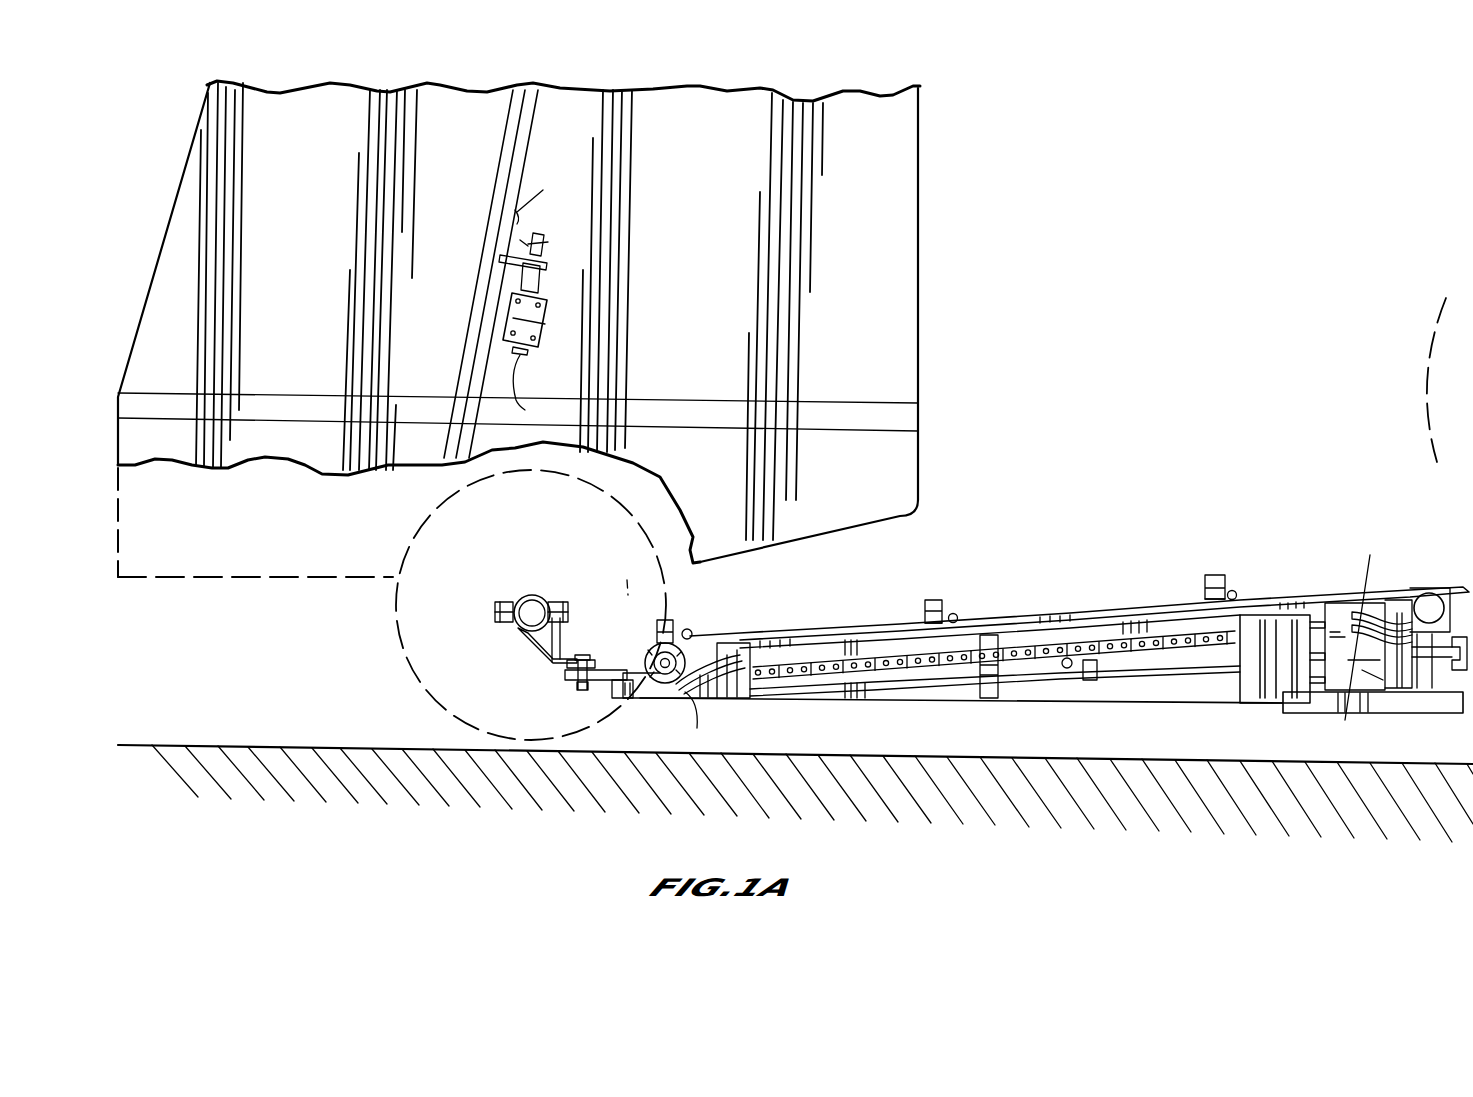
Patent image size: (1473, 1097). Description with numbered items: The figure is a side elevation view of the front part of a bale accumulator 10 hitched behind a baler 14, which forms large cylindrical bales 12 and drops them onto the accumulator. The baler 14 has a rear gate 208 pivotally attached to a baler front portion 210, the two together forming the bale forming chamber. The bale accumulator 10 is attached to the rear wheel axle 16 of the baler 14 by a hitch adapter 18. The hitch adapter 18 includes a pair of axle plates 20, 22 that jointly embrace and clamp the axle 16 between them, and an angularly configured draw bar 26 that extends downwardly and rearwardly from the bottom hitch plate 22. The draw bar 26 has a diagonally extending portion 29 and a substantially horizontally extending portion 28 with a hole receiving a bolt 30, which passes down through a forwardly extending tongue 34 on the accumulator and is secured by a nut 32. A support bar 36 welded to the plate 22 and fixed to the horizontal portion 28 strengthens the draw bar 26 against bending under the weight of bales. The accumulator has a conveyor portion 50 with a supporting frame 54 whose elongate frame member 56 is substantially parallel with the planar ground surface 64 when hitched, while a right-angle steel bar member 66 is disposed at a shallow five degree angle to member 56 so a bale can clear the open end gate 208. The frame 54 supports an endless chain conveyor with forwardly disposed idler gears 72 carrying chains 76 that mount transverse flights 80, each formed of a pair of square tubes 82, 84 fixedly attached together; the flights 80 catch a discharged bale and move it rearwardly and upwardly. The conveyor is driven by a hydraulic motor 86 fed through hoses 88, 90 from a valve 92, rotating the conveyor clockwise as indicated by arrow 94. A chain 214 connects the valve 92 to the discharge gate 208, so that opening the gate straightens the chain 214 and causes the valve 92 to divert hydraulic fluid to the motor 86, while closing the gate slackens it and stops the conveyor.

The bale accumulator 10 is at (1292, 405).
The large cylindrical bale 12 is at (1437, 342).
The baler 14 is at (1012, 172).
The axle 16 is at (537, 603).
The hitch adapter 18 is at (465, 603).
The axle plate 20 is at (523, 600).
The axle plate 22 is at (512, 618).
The draw bar 26 is at (495, 683).
The horizontally extending portion 28 is at (545, 650).
The diagonally extending portion 29 is at (545, 680).
The bolt 30 is at (582, 658).
The nut 32 is at (578, 691).
The tongue 34 is at (615, 699).
The support bar 36 is at (580, 610).
The conveyor portion 50 is at (1090, 485).
The supporting frame 54 is at (912, 706).
The frame member 56 is at (960, 702).
The ground surface 64 is at (236, 745).
The angled bar member 66 is at (1040, 622).
The idler gear 72 is at (700, 650).
The chain 76 is at (1048, 662).
The flight 80 is at (673, 622).
The square tube 82 is at (925, 619).
The square tube 84 is at (955, 614).
The hydraulic motor 86 is at (1430, 593).
The hose 88 is at (733, 688).
The hose 90 is at (697, 690).
The valve 92 is at (548, 312).
The arrow 94 is at (643, 636).
The rear gate 208 is at (900, 290).
The baler front portion 210 is at (190, 175).
The chain 214 is at (530, 162).